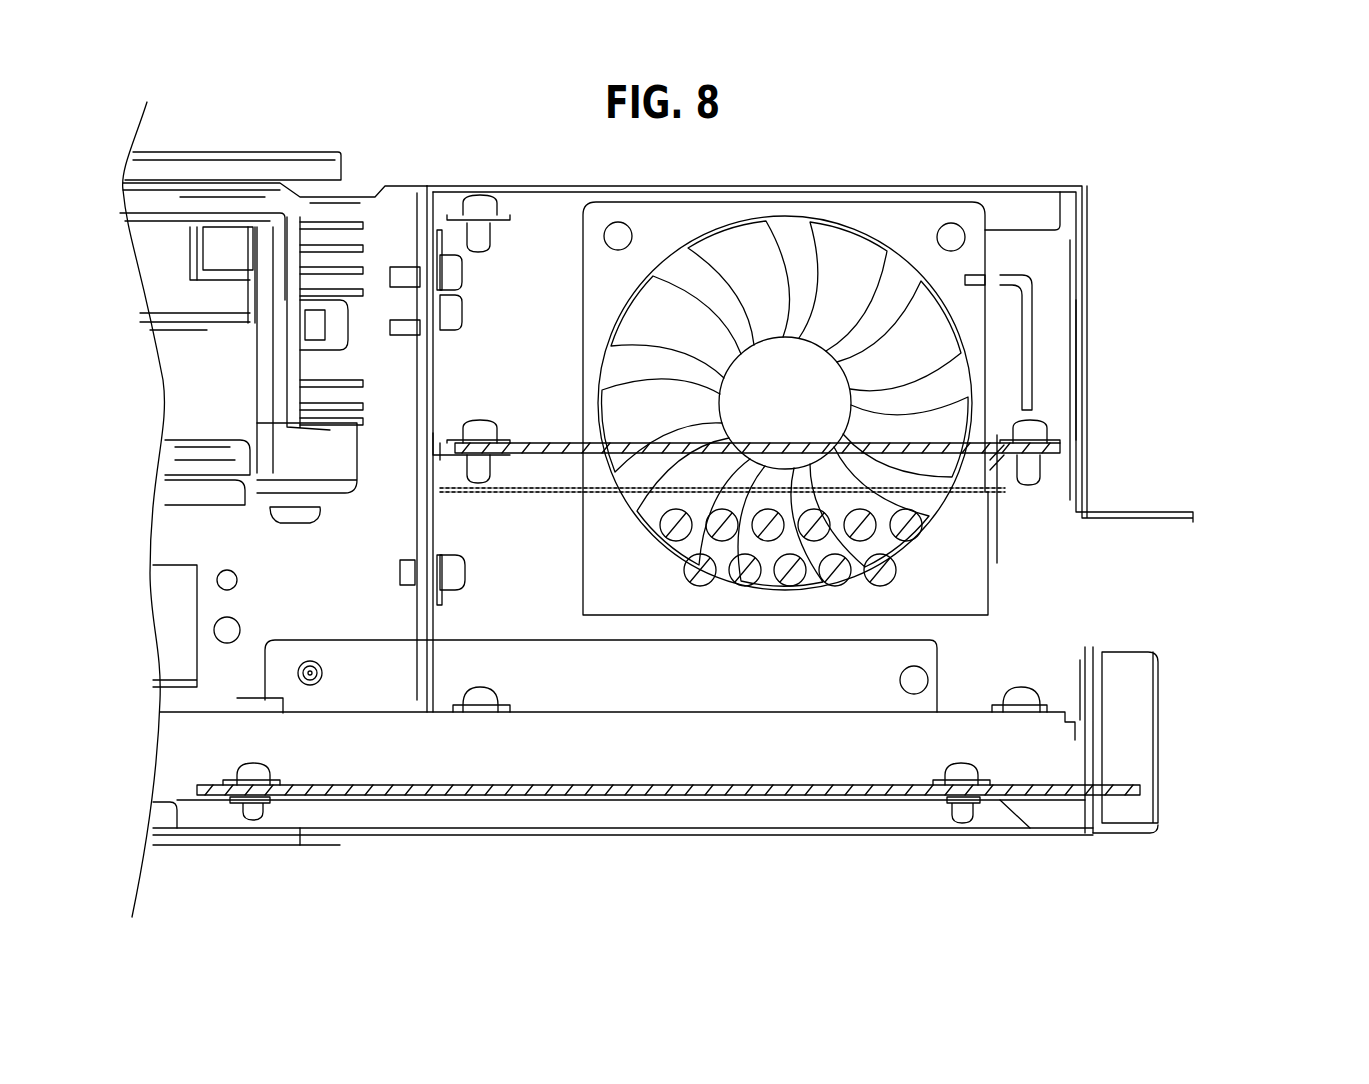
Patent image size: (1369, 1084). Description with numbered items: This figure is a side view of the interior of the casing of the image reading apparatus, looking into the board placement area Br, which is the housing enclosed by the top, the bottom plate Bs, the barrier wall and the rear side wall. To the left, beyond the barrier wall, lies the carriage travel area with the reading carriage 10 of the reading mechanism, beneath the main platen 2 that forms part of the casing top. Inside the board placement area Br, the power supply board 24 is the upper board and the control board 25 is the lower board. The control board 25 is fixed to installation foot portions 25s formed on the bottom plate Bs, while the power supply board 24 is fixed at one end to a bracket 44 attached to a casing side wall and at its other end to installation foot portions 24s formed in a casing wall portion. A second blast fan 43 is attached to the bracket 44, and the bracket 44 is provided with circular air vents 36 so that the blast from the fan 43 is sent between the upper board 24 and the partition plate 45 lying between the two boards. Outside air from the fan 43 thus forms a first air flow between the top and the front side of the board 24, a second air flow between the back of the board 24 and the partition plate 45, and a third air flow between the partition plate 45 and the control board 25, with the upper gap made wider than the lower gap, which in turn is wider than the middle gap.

The main platen 2 is at (270, 150).
The reading carriage 10 is at (140, 262).
The power supply board 24 is at (514, 442).
The installation foot portion 24s is at (1040, 420).
The control board 25 is at (833, 793).
The installation foot portion 25s is at (250, 806).
The air vents 36 is at (835, 582).
The second blast fan 43 is at (795, 240).
The bracket 44 is at (978, 576).
The partition plate 45 is at (645, 470).
The board placement area Br is at (1055, 282).
The bottom plate Bs is at (690, 836).